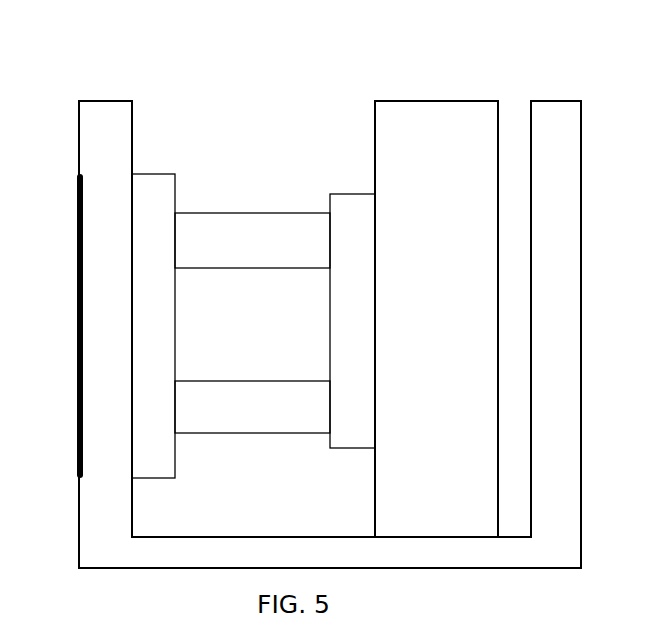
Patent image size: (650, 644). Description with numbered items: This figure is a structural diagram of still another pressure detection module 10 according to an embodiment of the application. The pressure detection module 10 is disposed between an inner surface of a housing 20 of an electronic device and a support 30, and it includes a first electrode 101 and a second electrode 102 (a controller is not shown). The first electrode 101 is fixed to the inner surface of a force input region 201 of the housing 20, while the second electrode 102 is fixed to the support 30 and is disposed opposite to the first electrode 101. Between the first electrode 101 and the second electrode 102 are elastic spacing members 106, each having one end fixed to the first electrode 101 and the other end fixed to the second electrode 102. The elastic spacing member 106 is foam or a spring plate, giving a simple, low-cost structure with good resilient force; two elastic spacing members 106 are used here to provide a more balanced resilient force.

The pressure detection module 10 is at (253, 255).
The first electrode 101 is at (163, 172).
The second electrode 102 is at (336, 285).
The elastic spacing member 106 is at (287, 250).
The housing 20 is at (115, 99).
The force input region 201 is at (77, 293).
The support 30 is at (418, 100).